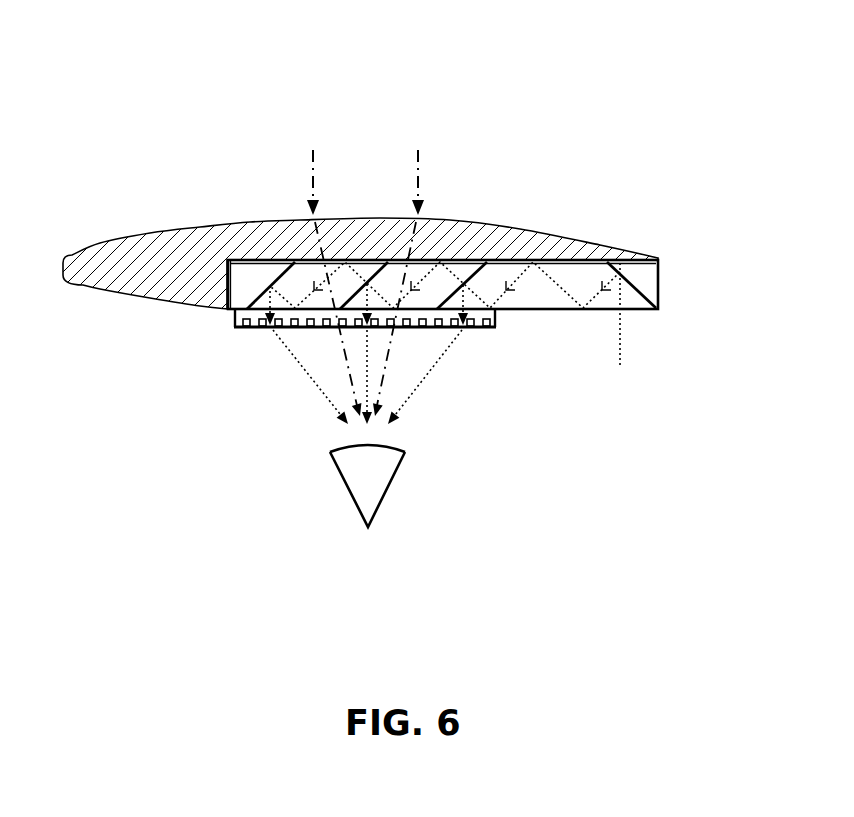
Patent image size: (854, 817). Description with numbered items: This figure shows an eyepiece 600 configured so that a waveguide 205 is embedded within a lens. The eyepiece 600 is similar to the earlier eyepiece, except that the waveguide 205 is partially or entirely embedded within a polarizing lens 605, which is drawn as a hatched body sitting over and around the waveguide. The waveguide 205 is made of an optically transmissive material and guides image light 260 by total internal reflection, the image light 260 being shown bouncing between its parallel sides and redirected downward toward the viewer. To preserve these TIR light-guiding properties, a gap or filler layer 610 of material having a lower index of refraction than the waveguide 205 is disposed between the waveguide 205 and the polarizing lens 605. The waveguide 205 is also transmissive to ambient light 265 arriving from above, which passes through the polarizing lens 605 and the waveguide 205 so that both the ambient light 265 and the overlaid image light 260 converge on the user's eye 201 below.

The eyepiece 600 is at (131, 85).
The polarizing lens 605 is at (166, 278).
The gap or filler layer 610 is at (258, 260).
The waveguide 205 is at (658, 280).
The image light 260 is at (620, 348).
The ambient light 265 is at (418, 160).
The eye 201 is at (387, 483).